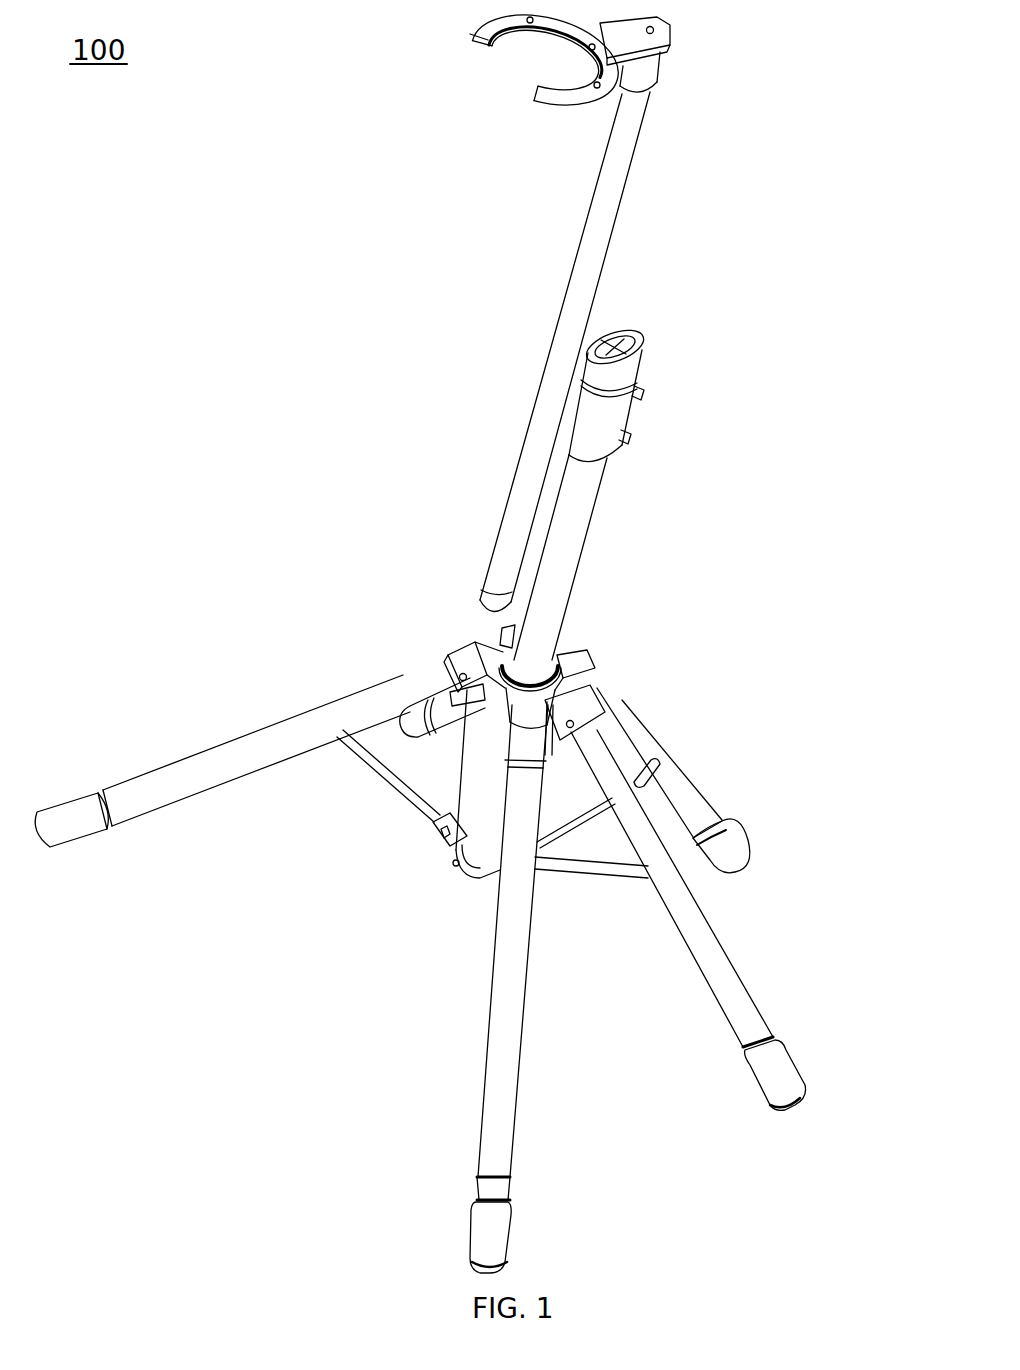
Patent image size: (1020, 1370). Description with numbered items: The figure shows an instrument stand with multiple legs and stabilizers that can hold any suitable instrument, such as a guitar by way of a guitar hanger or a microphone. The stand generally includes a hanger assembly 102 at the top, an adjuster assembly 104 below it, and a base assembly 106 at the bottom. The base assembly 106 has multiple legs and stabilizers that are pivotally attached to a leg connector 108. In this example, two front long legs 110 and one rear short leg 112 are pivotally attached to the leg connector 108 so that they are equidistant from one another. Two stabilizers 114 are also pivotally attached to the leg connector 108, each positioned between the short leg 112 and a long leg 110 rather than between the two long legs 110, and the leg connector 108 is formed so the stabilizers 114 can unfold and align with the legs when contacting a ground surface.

The hanger assembly 102 is at (625, 199).
The adjuster assembly 104 is at (637, 380).
The base assembly 106 is at (560, 676).
The leg connector 108 is at (458, 640).
The front long leg 110 is at (283, 733).
The rear short leg 112 is at (697, 787).
The stabilizer 114 is at (425, 712).